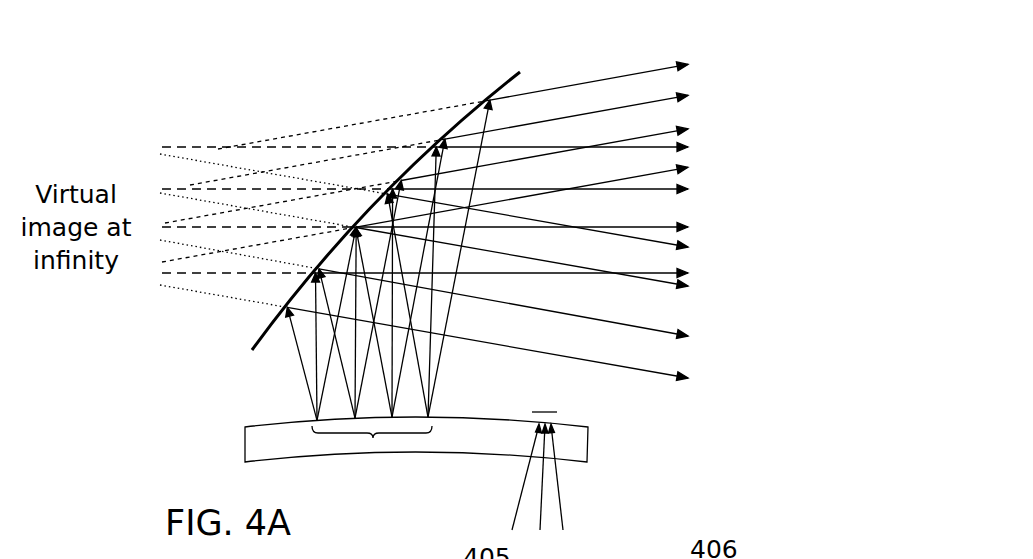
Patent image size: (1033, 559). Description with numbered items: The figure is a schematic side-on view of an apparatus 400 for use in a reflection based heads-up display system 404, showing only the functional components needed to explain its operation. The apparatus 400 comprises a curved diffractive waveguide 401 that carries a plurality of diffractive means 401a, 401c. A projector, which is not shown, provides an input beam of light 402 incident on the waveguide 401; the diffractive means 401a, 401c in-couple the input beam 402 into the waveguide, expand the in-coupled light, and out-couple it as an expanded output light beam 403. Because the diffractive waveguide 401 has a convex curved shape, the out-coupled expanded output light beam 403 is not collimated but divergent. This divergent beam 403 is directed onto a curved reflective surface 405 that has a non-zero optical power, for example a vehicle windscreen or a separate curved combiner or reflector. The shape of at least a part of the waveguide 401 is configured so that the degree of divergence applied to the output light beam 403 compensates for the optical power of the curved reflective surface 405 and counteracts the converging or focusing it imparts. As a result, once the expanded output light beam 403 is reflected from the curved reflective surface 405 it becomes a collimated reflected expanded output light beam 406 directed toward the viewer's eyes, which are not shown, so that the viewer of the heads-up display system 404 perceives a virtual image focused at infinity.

The apparatus 400 is at (403, 457).
The diffractive waveguide 401 is at (580, 442).
The diffractive means 401a is at (548, 399).
The diffractive means 401c is at (373, 437).
The input beam of light 402 is at (575, 504).
The expanded output light beam 403 is at (265, 386).
The reflection based heads-up display system 404 is at (222, 97).
The curved reflective surface 405 is at (508, 83).
The collimated reflected expanded output light beam 406 is at (649, 58).